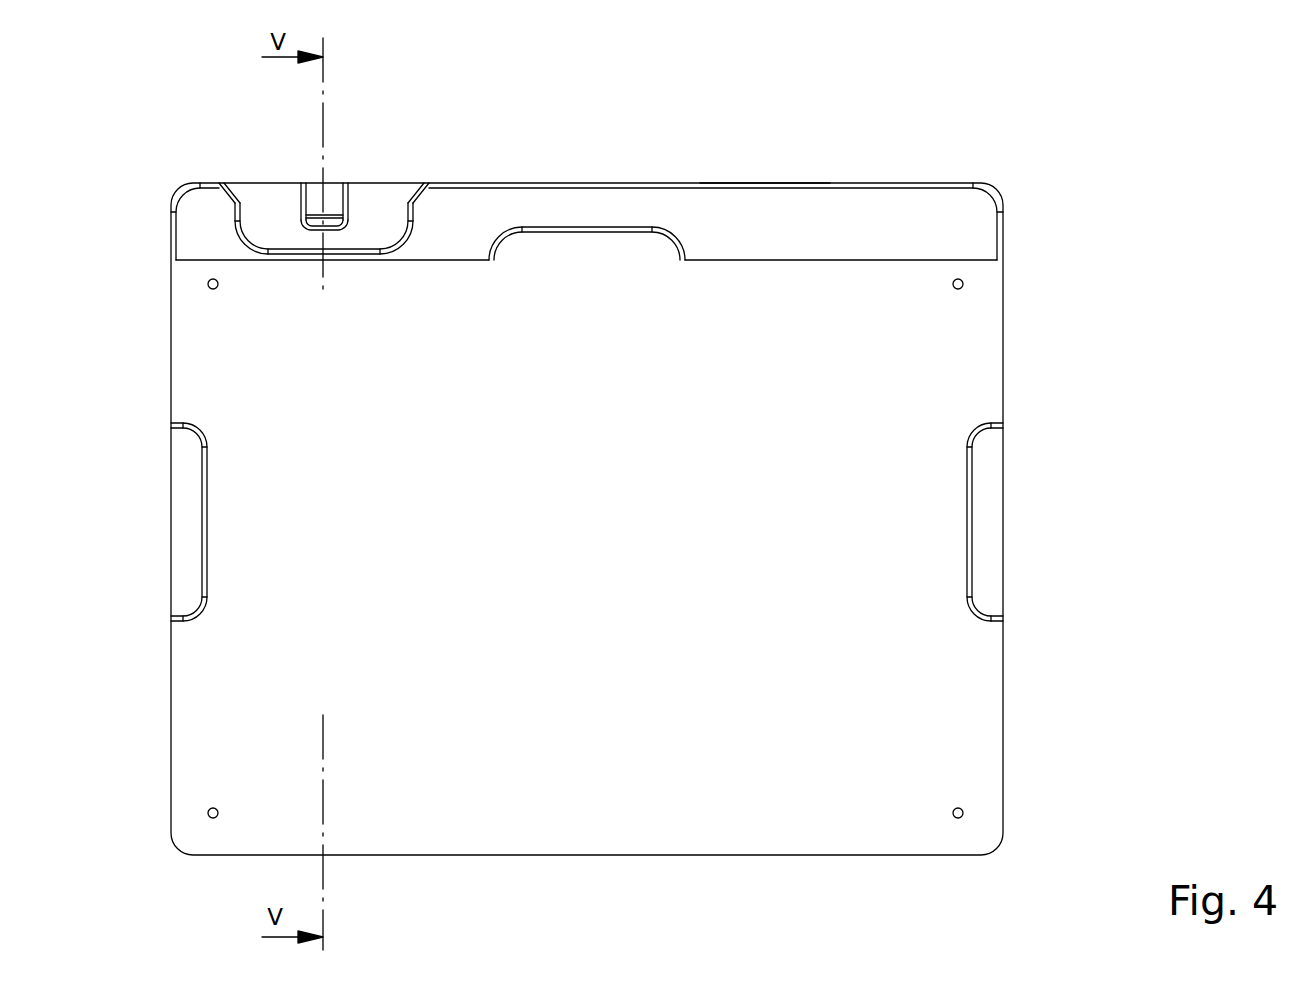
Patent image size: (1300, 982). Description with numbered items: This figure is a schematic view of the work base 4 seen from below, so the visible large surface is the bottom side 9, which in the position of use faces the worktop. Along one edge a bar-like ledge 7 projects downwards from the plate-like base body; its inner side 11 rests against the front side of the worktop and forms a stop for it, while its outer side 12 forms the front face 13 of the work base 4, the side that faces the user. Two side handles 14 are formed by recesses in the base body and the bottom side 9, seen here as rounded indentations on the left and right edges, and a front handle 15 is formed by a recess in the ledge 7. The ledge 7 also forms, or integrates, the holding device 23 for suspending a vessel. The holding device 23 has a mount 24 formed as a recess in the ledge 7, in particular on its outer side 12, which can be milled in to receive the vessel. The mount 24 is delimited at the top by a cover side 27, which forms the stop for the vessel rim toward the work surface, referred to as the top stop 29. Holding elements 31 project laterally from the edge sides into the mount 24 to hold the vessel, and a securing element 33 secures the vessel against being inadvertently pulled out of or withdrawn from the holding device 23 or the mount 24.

The work base 4 is at (1154, 119).
The ledge 7 is at (852, 228).
The bottom side 9 is at (927, 354).
The inner side 11 is at (857, 262).
The outer side 12 is at (765, 130).
The front face 13 is at (762, 183).
The side handle 14 is at (183, 523).
The front handle 15 is at (586, 248).
The holding device 23 is at (287, 139).
The mount 24 is at (256, 167).
The cover side 27 is at (270, 228).
The top stop 29 is at (325, 240).
The holding element 31 is at (236, 185).
The securing element 33 is at (314, 199).